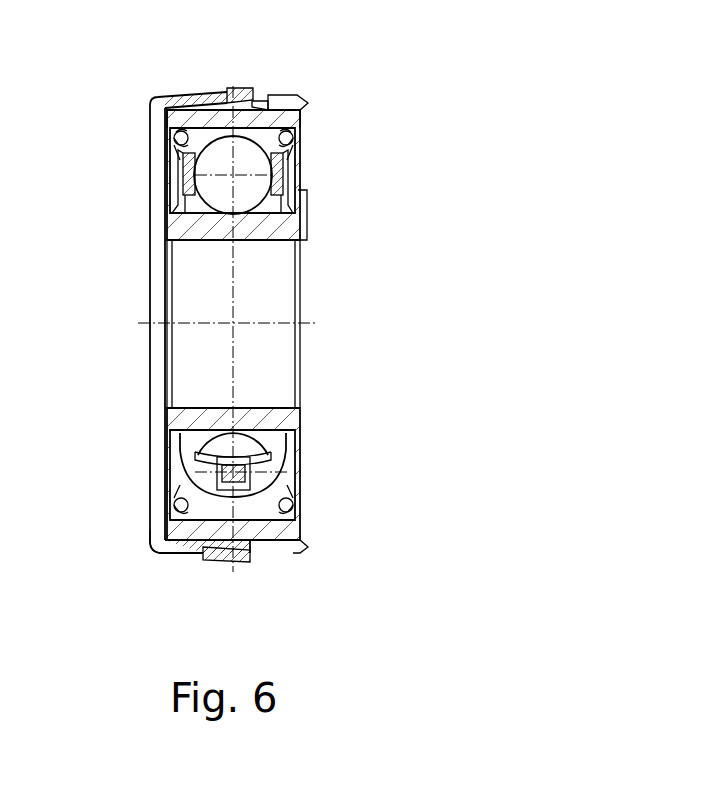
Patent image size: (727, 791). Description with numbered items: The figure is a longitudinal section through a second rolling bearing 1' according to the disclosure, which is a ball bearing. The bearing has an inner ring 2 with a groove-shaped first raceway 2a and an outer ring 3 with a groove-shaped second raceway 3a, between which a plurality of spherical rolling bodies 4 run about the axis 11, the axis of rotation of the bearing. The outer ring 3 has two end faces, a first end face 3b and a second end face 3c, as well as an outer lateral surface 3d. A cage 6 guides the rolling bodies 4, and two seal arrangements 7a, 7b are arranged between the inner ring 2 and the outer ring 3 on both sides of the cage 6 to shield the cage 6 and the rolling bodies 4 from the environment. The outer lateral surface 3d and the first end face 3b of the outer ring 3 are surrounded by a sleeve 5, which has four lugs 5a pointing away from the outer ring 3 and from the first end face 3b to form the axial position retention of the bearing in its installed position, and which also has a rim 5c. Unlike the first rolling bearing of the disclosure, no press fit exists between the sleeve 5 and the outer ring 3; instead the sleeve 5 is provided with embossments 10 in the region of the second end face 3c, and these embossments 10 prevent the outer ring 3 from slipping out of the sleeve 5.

The second rolling bearing 1' is at (389, 66).
The inner ring 2 is at (291, 228).
The first raceway 2a is at (217, 443).
The outer ring 3 is at (297, 528).
The second raceway 3a is at (213, 503).
The first end face 3b is at (153, 127).
The second end face 3c is at (303, 117).
The outer lateral surface 3d is at (260, 100).
The rolling bodies 4 is at (244, 438).
The sleeve 5 is at (157, 98).
The lugs 5a is at (245, 88).
The rim 5c is at (155, 533).
The cage 6 is at (296, 461).
The seal arrangement 7a is at (173, 457).
The seal arrangement 7b is at (301, 482).
The embossments 10 is at (300, 100).
The axis 11 is at (275, 323).